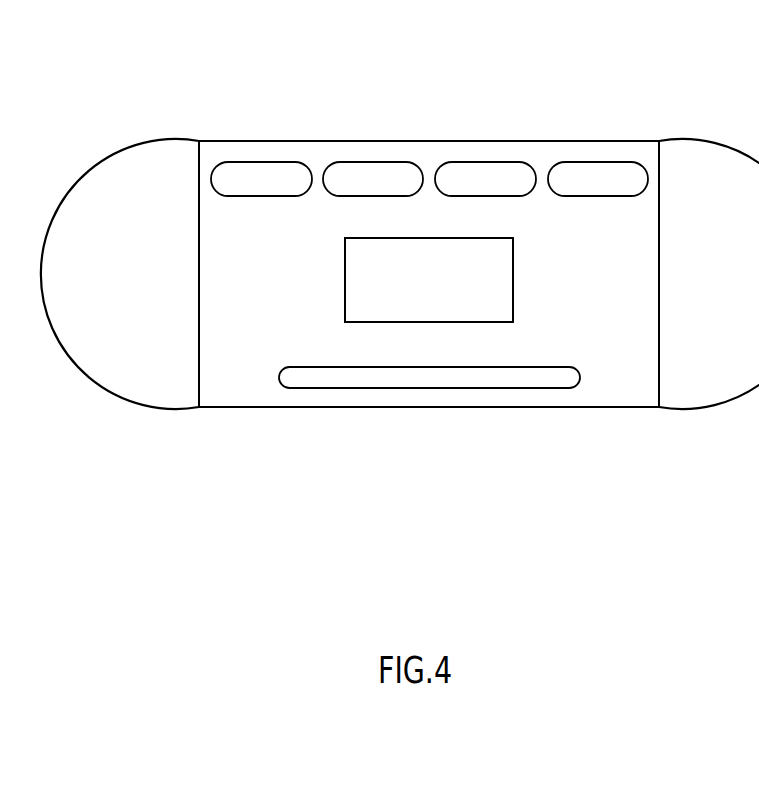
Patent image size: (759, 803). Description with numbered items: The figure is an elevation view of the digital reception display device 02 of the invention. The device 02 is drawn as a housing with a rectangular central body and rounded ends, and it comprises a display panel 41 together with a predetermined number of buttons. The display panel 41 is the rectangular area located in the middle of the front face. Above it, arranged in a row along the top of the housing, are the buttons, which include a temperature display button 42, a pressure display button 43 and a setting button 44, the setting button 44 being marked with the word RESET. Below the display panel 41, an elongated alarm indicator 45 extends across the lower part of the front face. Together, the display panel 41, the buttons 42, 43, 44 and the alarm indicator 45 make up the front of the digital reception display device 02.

The digital reception display device 02 is at (145, 387).
The display panel 41 is at (412, 322).
The temperature display button 42 is at (260, 163).
The pressure display button 43 is at (380, 163).
The setting button 44 is at (592, 162).
The alarm indicator 45 is at (490, 388).